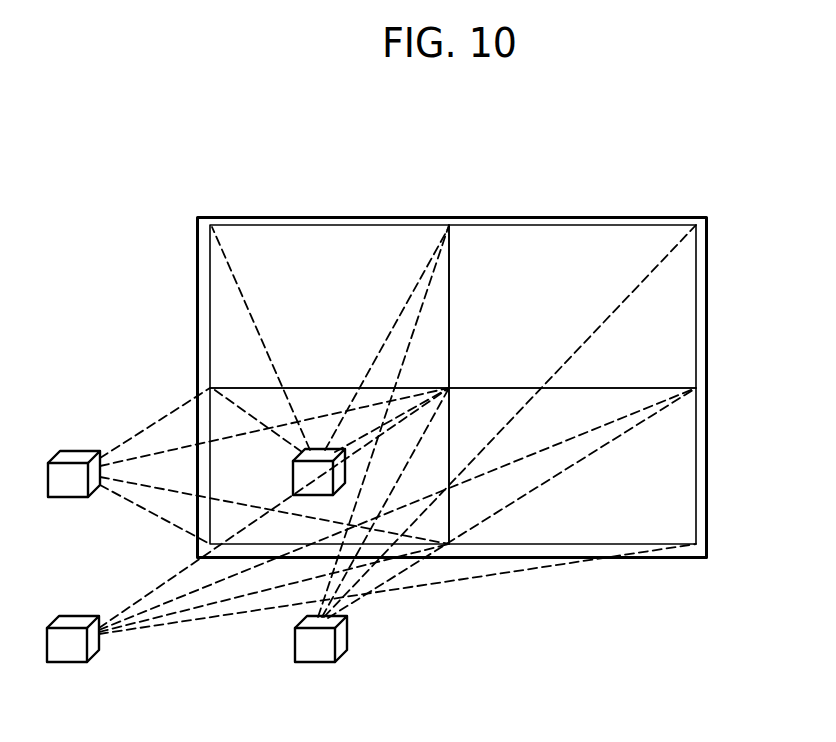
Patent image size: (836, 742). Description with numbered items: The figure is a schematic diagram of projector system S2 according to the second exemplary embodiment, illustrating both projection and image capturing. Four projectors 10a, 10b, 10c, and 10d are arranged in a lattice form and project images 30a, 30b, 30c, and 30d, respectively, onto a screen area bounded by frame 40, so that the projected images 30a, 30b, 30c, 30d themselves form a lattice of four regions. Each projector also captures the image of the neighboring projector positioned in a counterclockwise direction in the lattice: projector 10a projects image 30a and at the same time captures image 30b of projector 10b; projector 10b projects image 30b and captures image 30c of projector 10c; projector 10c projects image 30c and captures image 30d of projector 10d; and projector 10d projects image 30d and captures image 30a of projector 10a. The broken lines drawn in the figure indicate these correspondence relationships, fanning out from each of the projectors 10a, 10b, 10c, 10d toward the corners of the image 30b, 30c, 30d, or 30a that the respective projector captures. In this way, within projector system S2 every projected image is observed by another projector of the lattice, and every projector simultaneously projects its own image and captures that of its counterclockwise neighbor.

The projector system S2 is at (645, 183).
The screen frame 40 is at (195, 217).
The image 30a is at (330, 225).
The image 30b is at (197, 420).
The image 30c is at (571, 547).
The image 30d is at (573, 225).
The projector 10a is at (68, 496).
The projector 10b is at (67, 662).
The projector 10c is at (314, 662).
The projector 10d is at (312, 496).